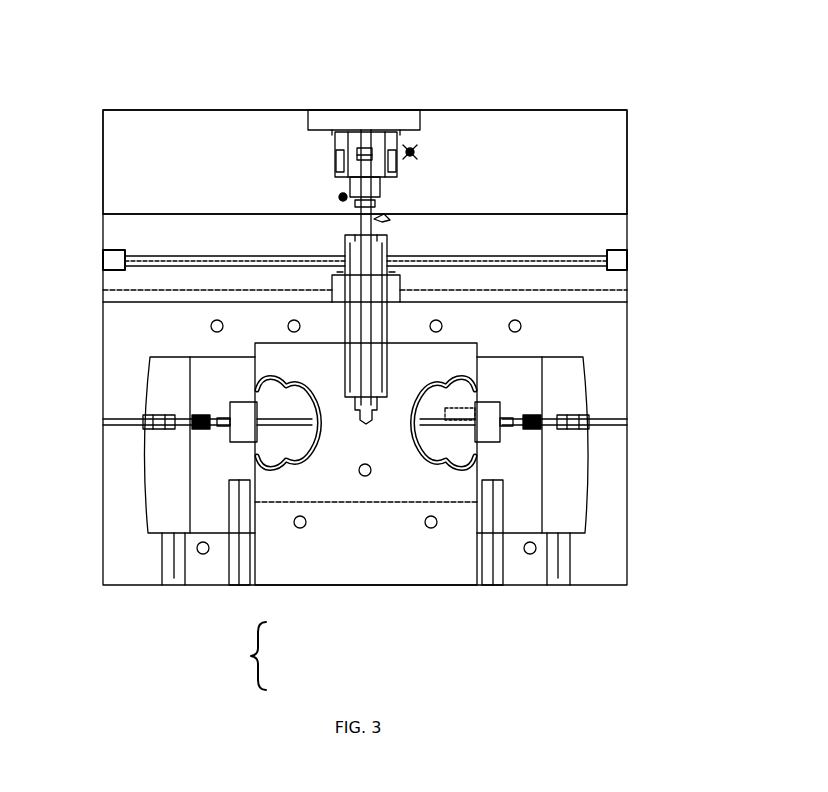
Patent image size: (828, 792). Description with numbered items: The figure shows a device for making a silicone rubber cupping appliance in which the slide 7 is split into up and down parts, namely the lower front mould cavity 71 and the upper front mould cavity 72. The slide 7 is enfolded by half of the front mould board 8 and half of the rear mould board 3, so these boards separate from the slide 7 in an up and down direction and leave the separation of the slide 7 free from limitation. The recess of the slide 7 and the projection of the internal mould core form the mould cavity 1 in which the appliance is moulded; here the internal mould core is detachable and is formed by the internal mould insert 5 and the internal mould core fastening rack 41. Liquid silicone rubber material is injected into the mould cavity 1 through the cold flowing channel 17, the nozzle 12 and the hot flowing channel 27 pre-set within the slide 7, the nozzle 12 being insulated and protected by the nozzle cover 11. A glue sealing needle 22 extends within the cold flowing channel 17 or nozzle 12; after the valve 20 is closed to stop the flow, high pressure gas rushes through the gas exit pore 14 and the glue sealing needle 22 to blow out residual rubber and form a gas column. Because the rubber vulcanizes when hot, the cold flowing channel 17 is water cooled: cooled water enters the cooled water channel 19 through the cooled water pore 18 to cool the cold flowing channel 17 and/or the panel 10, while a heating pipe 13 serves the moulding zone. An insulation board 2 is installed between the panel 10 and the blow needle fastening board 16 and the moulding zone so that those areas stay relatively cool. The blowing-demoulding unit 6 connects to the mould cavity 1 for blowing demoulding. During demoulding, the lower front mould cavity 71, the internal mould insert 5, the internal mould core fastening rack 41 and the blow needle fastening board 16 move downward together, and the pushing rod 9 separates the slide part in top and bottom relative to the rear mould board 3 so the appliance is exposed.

The mould cavity 1 is at (473, 377).
The insulation board 2 is at (600, 296).
The rear mould board 3 is at (588, 575).
The internal mould insert 5 is at (253, 410).
The blowing-demoulding unit 6 is at (570, 414).
The slide 7 is at (249, 656).
The front mould board 8 is at (613, 410).
The pushing rod 9 is at (497, 520).
The panel 10 is at (605, 197).
The nozzle cover 11 is at (332, 283).
The nozzle 12 is at (345, 243).
The heating pipe 13 is at (521, 326).
The gas exit pore 14 is at (341, 194).
The blow needle fastening board 16 is at (567, 500).
The cold flowing channel 17 is at (383, 218).
The cooled water pore 18 is at (615, 262).
The cooled water channel 19 is at (165, 254).
The valve 20 is at (375, 147).
The glue sealing needle 22 is at (338, 143).
The hot flowing channel 27 is at (253, 392).
The internal mould core fastening rack 41 is at (525, 478).
The lower front mould cavity 71 is at (417, 480).
The upper front mould cavity 72 is at (397, 402).